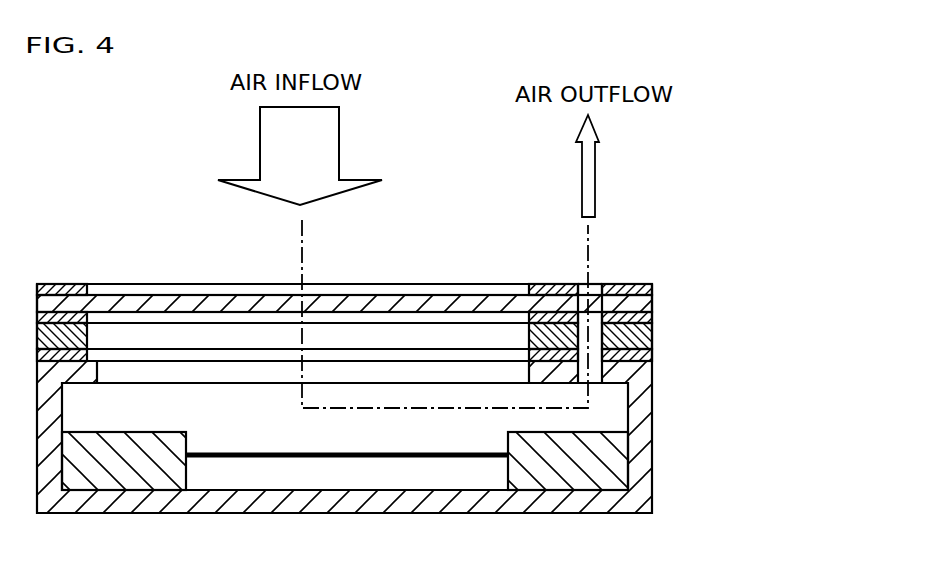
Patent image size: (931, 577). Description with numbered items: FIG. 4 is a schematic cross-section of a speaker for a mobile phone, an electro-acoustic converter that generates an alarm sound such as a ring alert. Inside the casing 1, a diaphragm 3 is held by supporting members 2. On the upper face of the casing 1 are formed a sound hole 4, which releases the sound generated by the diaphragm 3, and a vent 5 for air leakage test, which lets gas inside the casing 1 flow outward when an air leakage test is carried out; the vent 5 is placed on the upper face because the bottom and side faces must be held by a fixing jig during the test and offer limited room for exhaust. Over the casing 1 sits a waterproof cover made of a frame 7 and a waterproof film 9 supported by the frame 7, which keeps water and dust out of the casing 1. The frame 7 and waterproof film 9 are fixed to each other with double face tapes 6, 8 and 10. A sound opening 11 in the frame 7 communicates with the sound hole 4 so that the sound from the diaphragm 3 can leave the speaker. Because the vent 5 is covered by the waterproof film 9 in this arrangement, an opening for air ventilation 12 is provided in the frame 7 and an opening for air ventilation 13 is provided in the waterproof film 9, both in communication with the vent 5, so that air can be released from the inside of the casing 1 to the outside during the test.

The casing 1 is at (642, 415).
The supporting member 2 is at (590, 483).
The diaphragm 3 is at (422, 458).
The sound hole 4 is at (178, 372).
The vent for air leakage test 5 is at (533, 284).
The double face tape 6 is at (653, 356).
The frame 7 is at (653, 338).
The double face tape 8 is at (653, 319).
The waterproof film 9 is at (653, 305).
The double face tape 10 is at (625, 284).
The sound opening 11 is at (225, 337).
The opening for air ventilation 12 is at (568, 284).
The opening for air ventilation 13 is at (597, 284).